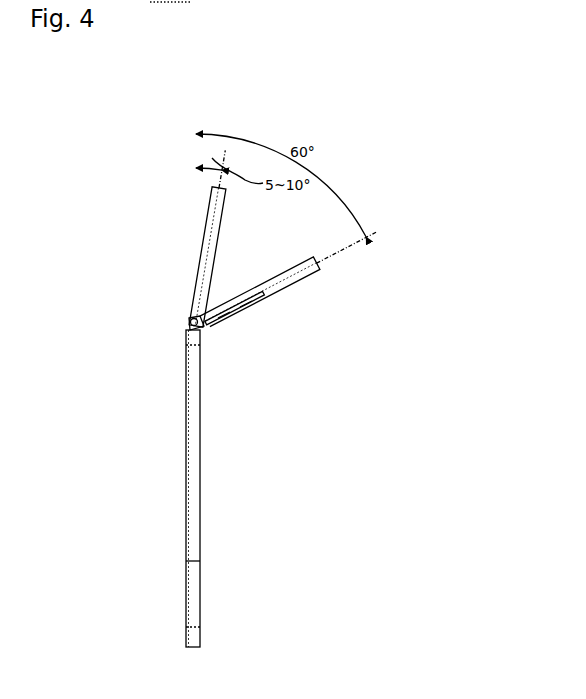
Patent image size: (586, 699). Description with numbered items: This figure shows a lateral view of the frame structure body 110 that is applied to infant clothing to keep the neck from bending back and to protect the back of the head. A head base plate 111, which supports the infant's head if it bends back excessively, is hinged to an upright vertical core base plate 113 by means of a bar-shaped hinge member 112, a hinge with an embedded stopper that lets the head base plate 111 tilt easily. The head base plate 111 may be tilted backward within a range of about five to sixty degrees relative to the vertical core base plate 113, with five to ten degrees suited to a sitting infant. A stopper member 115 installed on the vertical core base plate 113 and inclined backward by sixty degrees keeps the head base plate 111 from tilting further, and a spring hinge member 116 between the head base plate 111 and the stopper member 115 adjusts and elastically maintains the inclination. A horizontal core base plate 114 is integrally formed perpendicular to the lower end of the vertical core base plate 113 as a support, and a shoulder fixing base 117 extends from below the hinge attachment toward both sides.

The frame structure body 110 is at (106, 153).
The head base plate 111 is at (288, 285).
The bar-shaped hinge member 112 is at (185, 323).
The vertical core base plate 113 is at (200, 455).
The horizontal core base plate 114 is at (199, 593).
The stopper member 115 is at (222, 332).
The spring hinge member 116 is at (197, 303).
The shoulder fixing base 117 is at (186, 347).